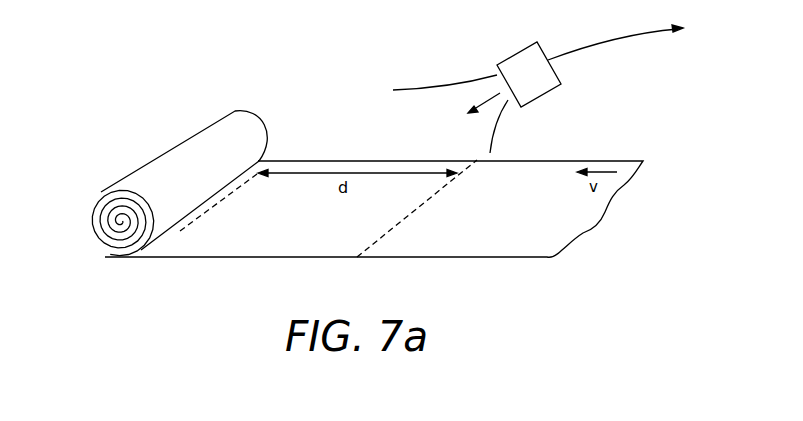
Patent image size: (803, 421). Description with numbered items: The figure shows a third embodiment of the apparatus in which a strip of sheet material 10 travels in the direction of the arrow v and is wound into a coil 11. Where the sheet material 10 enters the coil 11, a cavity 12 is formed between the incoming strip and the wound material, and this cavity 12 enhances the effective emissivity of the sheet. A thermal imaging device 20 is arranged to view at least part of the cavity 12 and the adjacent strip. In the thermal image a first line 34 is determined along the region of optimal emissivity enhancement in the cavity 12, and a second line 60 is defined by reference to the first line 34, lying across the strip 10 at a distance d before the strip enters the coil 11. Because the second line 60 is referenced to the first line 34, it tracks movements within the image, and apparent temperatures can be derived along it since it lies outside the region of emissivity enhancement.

The sheet material 10 is at (531, 215).
The coil 11 is at (118, 221).
The cavity 12 is at (265, 159).
The thermal imaging device 20 is at (560, 85).
The line 34 is at (177, 233).
The second line 60 is at (395, 228).